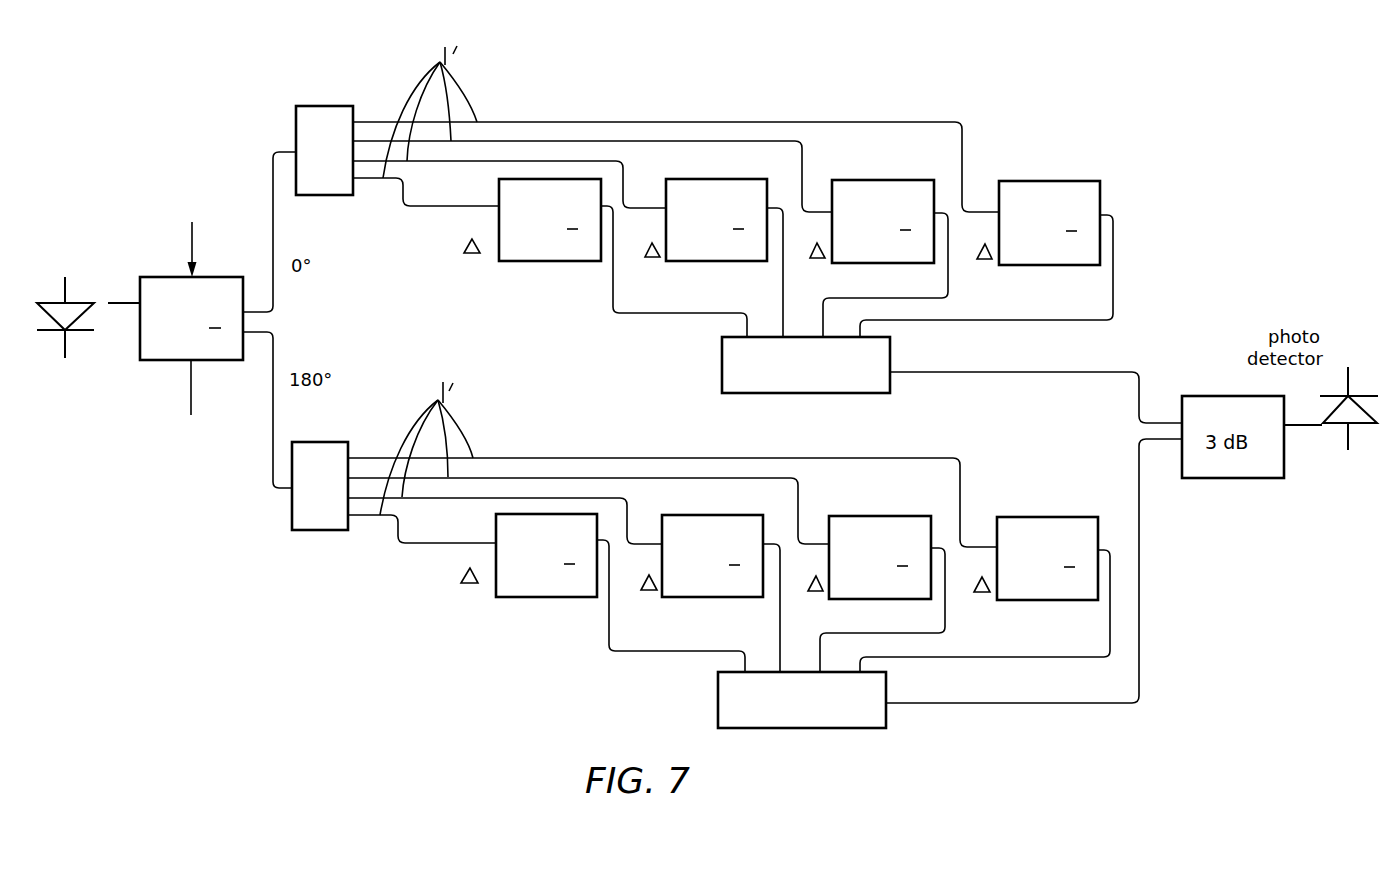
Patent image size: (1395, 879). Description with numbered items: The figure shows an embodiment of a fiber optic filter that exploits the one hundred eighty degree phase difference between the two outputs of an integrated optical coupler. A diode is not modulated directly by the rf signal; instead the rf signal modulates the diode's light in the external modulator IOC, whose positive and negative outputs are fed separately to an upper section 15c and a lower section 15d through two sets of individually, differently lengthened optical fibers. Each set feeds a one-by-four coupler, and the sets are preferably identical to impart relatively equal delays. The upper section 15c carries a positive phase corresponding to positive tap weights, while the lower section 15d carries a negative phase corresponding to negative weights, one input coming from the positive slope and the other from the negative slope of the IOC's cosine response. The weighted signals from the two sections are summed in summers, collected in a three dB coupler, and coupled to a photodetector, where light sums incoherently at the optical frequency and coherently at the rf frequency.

The upper section 15c is at (1100, 128).
The lower section 15d is at (1196, 573).